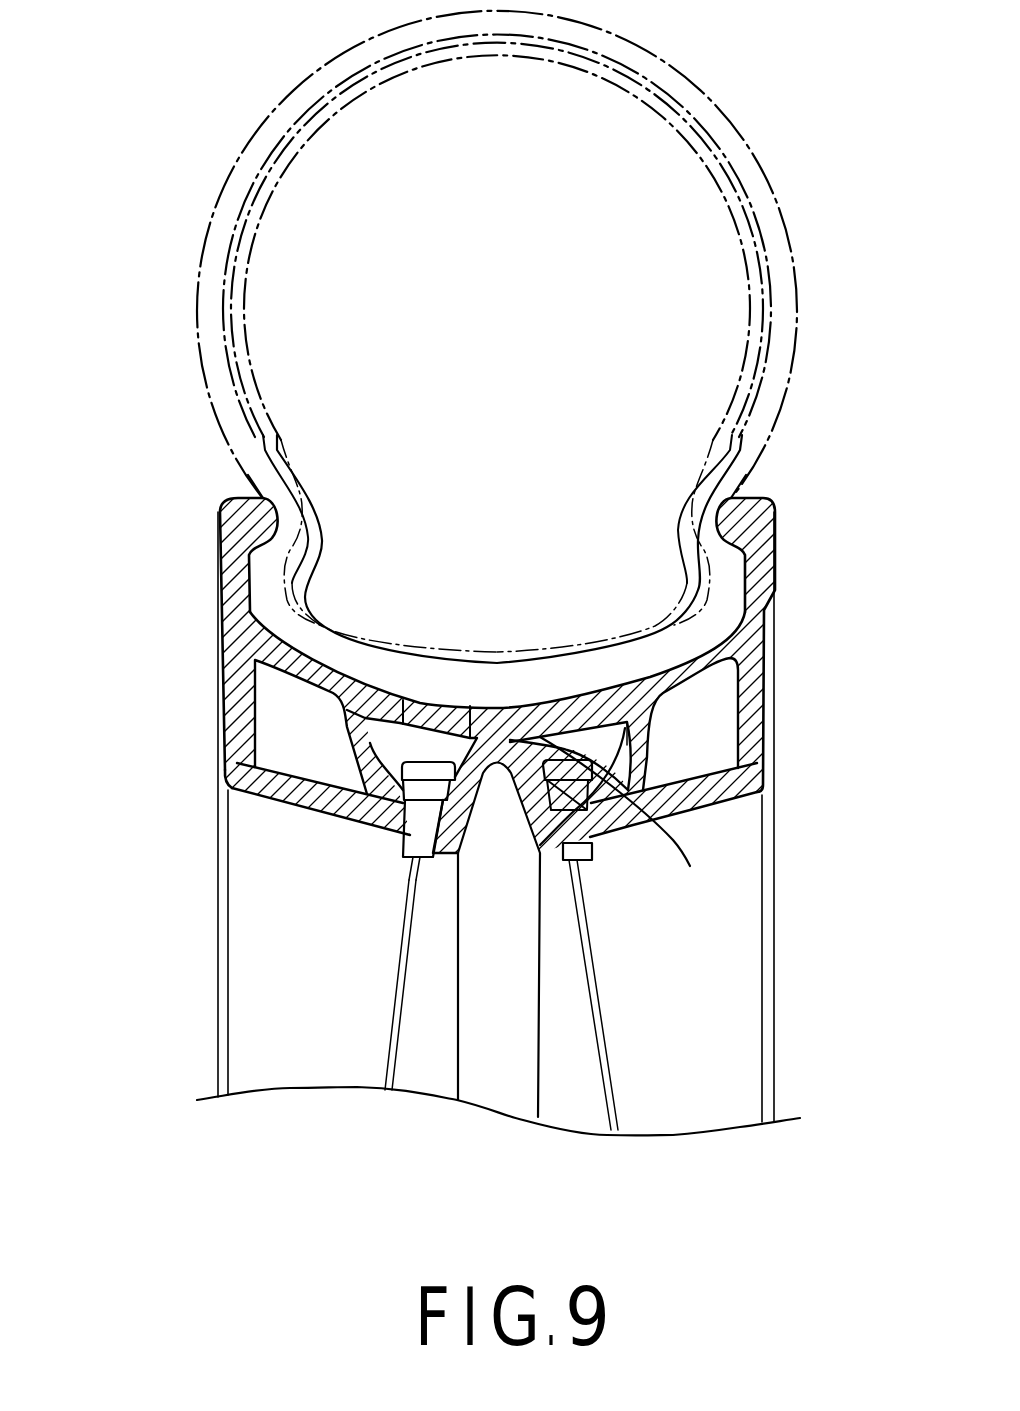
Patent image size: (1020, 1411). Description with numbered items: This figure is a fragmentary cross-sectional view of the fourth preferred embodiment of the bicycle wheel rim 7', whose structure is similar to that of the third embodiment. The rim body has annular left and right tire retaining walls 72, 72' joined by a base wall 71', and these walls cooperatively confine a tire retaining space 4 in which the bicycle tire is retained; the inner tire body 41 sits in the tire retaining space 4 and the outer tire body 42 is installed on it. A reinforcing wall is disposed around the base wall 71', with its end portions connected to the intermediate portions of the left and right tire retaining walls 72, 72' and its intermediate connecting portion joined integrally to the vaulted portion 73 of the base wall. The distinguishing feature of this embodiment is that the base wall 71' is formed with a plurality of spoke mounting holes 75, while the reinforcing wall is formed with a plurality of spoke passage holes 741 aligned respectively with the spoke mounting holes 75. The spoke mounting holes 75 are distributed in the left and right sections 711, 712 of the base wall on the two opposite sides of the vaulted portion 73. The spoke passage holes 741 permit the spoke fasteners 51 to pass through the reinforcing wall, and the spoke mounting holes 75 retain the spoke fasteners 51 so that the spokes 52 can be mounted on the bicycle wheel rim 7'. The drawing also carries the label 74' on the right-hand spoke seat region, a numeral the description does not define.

The tire retaining space 4 is at (718, 598).
The inner tire body 41 is at (752, 272).
The outer tire body 42 is at (743, 163).
The bicycle wheel rim 7' is at (510, 718).
The left tire retaining wall 72 is at (187, 643).
The right tire retaining wall 72' is at (807, 645).
The spoke passage holes 741 is at (421, 723).
The spoke nipple seat 74' is at (743, 750).
The left section of the base wall 711 is at (397, 808).
The base wall 71' is at (278, 808).
The spoke mounting holes 75 is at (403, 798).
The spoke fasteners 51 is at (410, 858).
The spokes 52 is at (390, 1048).
The vaulted portion 73 is at (615, 820).
The right section of the base wall 712 is at (612, 832).